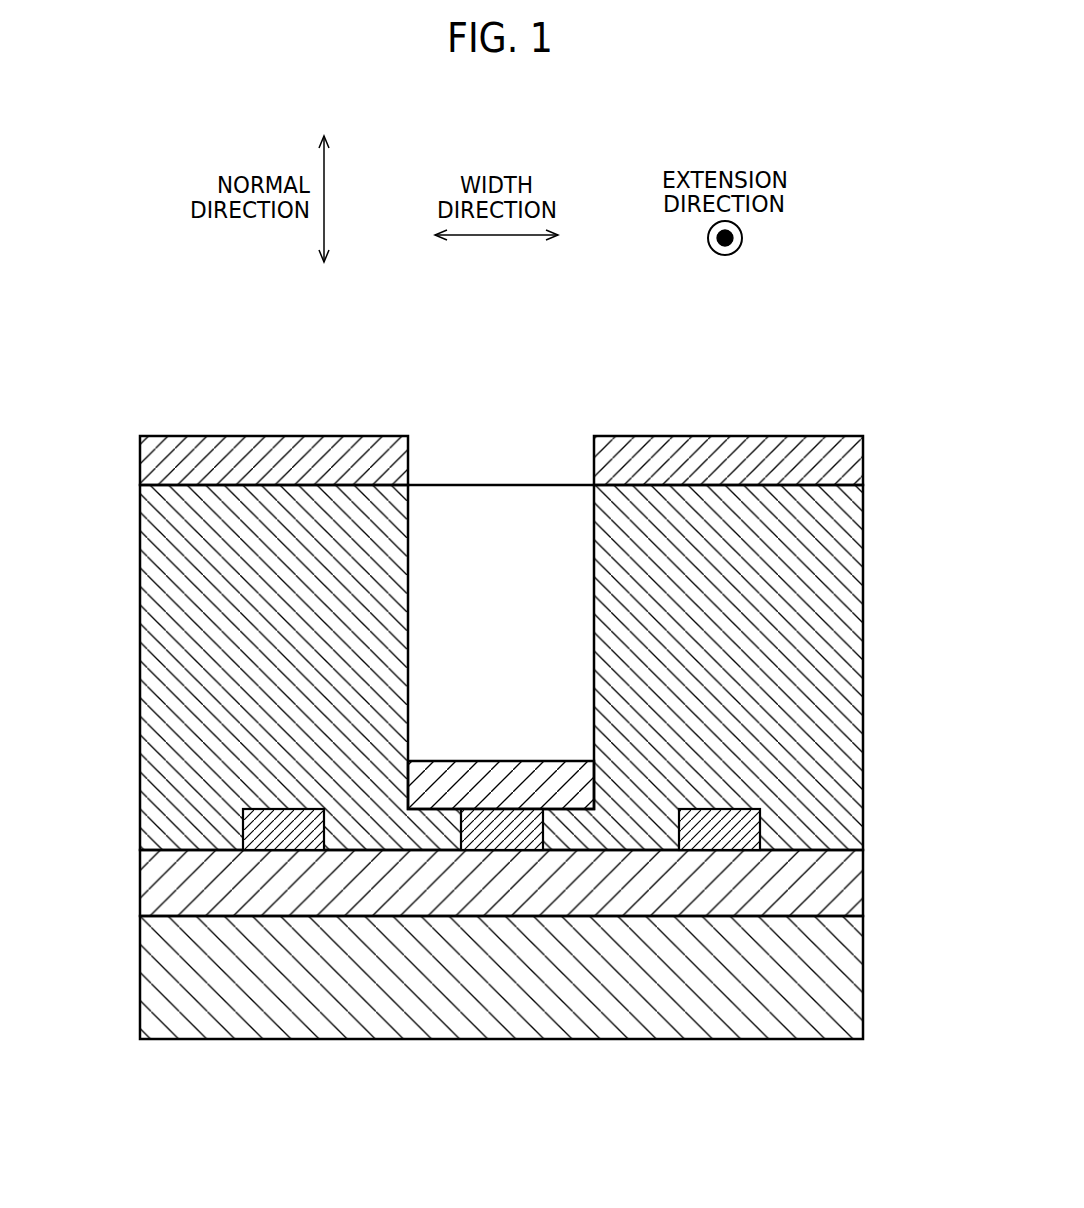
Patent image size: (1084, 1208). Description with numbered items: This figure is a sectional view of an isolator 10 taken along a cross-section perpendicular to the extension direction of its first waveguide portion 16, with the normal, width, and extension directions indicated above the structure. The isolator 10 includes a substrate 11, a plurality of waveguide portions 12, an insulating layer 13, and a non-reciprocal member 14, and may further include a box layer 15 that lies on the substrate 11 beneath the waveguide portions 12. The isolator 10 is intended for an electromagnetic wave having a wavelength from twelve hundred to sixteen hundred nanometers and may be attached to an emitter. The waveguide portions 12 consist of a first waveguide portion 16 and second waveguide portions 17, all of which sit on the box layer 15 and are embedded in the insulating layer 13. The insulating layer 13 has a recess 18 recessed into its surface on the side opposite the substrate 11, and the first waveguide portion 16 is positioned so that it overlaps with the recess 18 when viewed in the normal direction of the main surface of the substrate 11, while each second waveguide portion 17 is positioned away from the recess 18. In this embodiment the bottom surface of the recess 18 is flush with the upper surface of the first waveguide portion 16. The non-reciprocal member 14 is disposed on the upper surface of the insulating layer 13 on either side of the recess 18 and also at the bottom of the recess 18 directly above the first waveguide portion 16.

The isolator 10 is at (500, 749).
The substrate 11 is at (828, 978).
The waveguide portions 12 is at (500, 774).
The insulating layer 13 is at (833, 655).
The non-reciprocal member 14 is at (265, 467).
The box layer 15 is at (833, 888).
The first waveguide portion 16 is at (493, 827).
The second waveguide portion 17 is at (268, 832).
The recess 18 is at (516, 577).